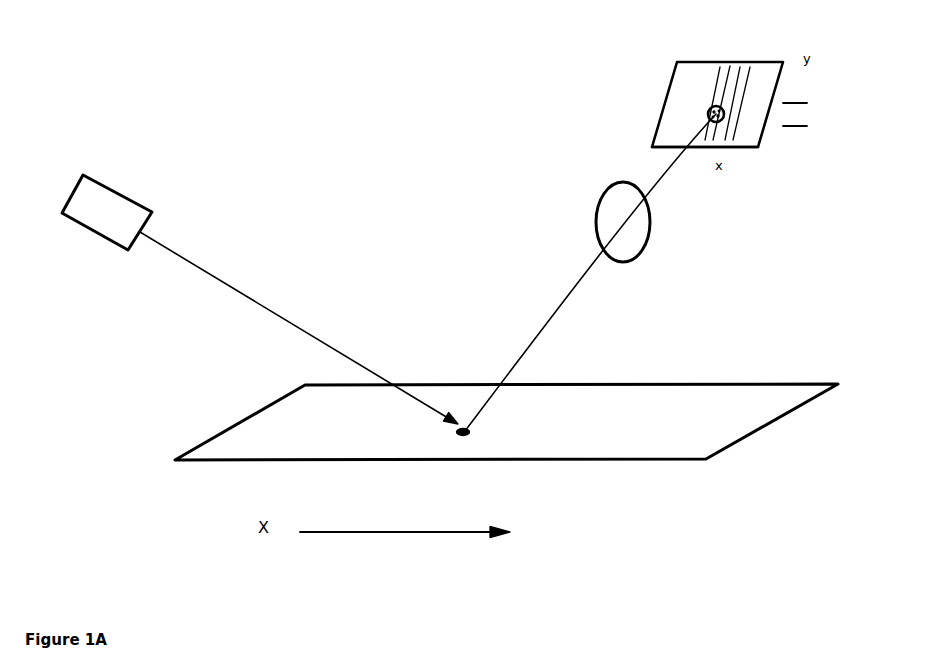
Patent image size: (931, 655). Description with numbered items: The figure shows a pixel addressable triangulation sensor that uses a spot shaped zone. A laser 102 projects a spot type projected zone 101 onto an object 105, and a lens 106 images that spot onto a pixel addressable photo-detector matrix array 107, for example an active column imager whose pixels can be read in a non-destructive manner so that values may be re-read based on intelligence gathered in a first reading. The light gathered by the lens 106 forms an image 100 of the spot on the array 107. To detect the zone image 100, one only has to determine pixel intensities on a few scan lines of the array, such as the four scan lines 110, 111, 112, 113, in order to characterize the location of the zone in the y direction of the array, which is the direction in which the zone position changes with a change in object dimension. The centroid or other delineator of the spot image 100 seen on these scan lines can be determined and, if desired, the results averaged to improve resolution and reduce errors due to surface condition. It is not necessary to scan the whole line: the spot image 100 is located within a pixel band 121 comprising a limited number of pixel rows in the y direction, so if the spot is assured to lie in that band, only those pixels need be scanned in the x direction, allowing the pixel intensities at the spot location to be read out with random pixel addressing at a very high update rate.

The image of spot type projected zone 100 is at (708, 112).
The spot type projected zone 101 is at (486, 428).
The laser 102 is at (107, 212).
The object 105 is at (660, 432).
The lens 106 is at (633, 234).
The pixel addressable photo-detector matrix array 107 is at (750, 148).
The scan line 110 is at (712, 94).
The scan line 111 is at (729, 62).
The scan line 112 is at (716, 114).
The scan line 113 is at (761, 84).
The pixel band 121 is at (812, 117).